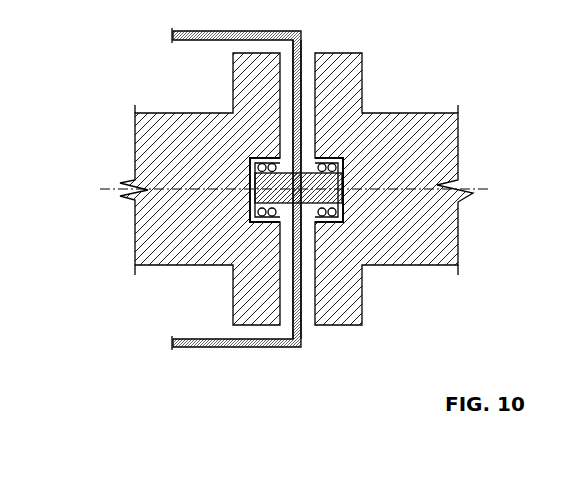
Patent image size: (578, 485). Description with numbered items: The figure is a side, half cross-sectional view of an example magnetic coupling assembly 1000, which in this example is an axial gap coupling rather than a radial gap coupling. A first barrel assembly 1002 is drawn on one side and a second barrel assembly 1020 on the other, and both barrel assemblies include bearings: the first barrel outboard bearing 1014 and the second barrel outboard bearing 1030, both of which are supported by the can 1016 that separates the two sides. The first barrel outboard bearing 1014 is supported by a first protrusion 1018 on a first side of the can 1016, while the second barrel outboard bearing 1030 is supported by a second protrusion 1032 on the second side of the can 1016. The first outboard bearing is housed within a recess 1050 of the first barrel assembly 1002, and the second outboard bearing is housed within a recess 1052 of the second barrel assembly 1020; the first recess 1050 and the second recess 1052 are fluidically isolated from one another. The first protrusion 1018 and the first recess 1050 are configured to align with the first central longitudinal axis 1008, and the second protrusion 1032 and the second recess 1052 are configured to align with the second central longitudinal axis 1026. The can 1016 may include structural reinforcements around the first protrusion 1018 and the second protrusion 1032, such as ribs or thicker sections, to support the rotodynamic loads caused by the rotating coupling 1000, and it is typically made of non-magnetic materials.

The magnetic coupling assembly 1000 is at (132, 42).
The first barrel assembly 1002 is at (218, 325).
The first central longitudinal axis 1008 is at (108, 193).
The first barrel outboard bearing 1014 is at (265, 212).
The can 1016 is at (362, 272).
The first protrusion 1018 is at (282, 177).
The second barrel assembly 1020 is at (378, 75).
The second central longitudinal axis 1026 is at (488, 192).
The second barrel outboard bearing 1030 is at (338, 213).
The second protrusion 1032 is at (343, 198).
The first recess 1050 is at (250, 183).
The second recess 1052 is at (313, 192).